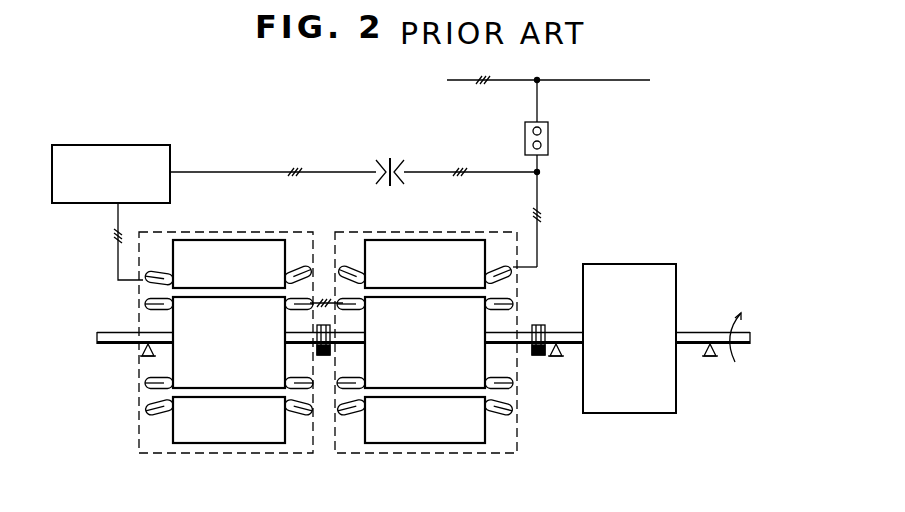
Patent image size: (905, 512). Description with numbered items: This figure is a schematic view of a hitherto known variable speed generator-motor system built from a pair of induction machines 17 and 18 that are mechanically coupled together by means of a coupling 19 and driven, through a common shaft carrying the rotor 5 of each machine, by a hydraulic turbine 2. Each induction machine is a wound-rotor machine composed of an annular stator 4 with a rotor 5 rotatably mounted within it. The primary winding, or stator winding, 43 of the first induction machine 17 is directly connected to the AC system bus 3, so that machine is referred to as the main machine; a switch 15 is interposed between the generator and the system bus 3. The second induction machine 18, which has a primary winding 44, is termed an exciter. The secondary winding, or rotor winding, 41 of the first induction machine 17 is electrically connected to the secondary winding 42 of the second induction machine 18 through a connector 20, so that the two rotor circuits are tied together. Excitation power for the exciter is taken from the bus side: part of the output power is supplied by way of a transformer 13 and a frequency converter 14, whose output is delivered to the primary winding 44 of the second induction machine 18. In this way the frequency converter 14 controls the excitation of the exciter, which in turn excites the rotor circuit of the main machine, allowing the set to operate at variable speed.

The hydraulic turbine 2 is at (626, 263).
The system bus 3 is at (604, 80).
The stator 4 is at (247, 240).
The rotor 5 is at (165, 364).
The transformer 13 is at (391, 152).
The frequency converter 14 is at (150, 143).
The switch 15 is at (549, 139).
The first induction machine 17 is at (463, 458).
The second induction machine 18 is at (262, 455).
The coupling 19 is at (324, 356).
The connector 20 is at (323, 300).
The secondary winding of the first induction machine 41 is at (513, 292).
The secondary winding of the second induction machine 42 is at (141, 300).
The primary winding of the first induction machine 43 is at (500, 266).
The primary winding of the second induction machine 44 is at (159, 274).